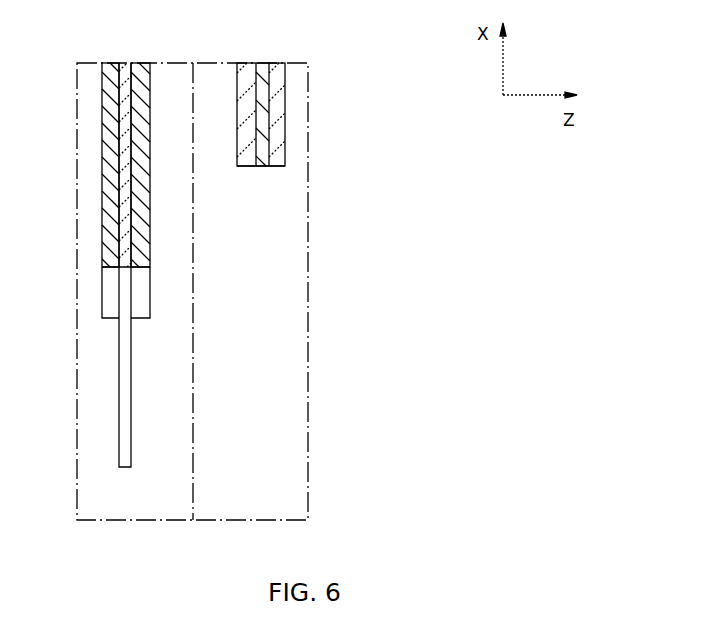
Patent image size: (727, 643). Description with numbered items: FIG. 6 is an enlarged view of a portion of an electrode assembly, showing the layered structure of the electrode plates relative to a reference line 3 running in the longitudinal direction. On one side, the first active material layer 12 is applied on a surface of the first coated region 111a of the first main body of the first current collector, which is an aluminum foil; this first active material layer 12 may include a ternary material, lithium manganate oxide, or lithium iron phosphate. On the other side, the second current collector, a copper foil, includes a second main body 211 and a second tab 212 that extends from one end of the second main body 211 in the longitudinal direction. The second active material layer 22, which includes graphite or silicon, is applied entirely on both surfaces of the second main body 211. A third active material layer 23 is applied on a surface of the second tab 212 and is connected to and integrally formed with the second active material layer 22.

The reference line / substrate axis 3 is at (197, 270).
The first active material layer 12 is at (242, 93).
The second active material layer 22 is at (106, 168).
The third active material layer 23 is at (108, 292).
The second main body 211 is at (128, 60).
The second tab 212 is at (127, 410).
The first coated region 111a is at (267, 168).